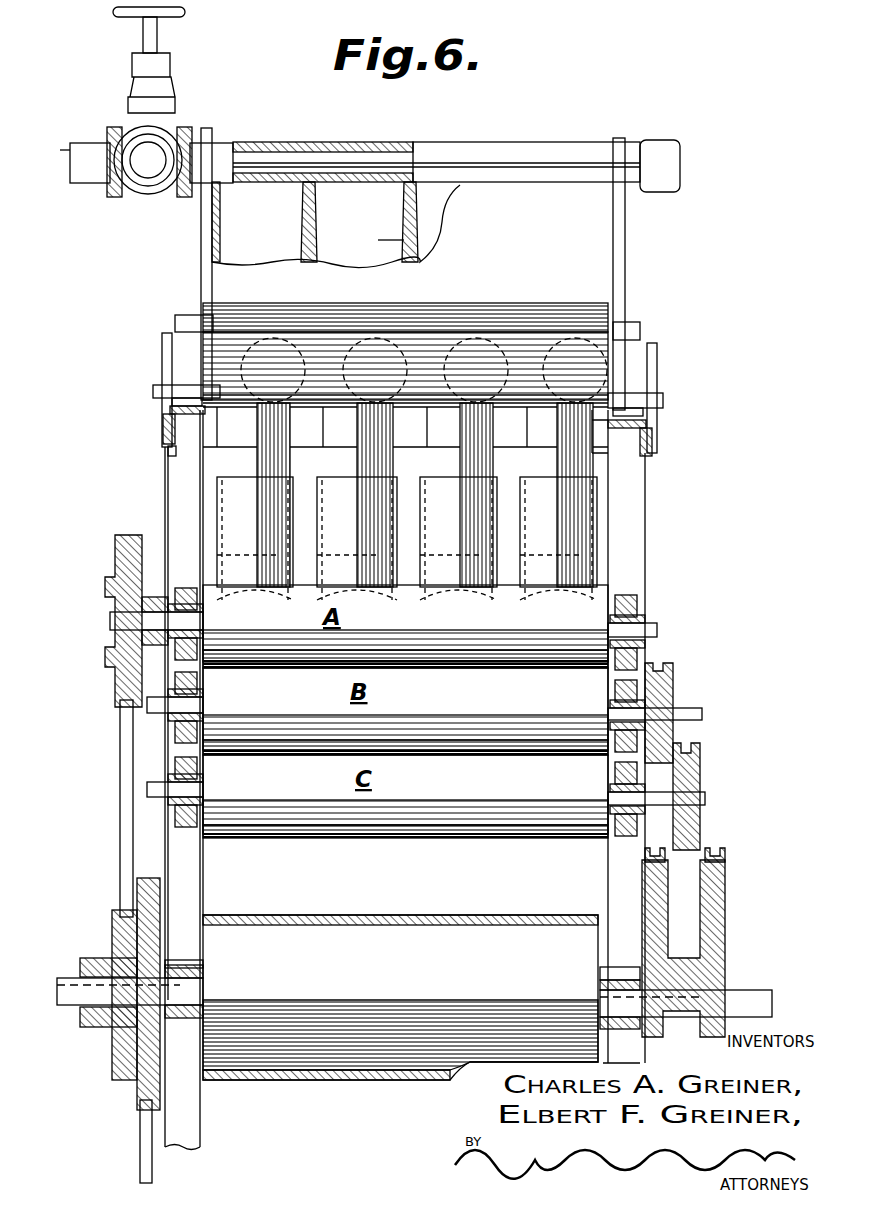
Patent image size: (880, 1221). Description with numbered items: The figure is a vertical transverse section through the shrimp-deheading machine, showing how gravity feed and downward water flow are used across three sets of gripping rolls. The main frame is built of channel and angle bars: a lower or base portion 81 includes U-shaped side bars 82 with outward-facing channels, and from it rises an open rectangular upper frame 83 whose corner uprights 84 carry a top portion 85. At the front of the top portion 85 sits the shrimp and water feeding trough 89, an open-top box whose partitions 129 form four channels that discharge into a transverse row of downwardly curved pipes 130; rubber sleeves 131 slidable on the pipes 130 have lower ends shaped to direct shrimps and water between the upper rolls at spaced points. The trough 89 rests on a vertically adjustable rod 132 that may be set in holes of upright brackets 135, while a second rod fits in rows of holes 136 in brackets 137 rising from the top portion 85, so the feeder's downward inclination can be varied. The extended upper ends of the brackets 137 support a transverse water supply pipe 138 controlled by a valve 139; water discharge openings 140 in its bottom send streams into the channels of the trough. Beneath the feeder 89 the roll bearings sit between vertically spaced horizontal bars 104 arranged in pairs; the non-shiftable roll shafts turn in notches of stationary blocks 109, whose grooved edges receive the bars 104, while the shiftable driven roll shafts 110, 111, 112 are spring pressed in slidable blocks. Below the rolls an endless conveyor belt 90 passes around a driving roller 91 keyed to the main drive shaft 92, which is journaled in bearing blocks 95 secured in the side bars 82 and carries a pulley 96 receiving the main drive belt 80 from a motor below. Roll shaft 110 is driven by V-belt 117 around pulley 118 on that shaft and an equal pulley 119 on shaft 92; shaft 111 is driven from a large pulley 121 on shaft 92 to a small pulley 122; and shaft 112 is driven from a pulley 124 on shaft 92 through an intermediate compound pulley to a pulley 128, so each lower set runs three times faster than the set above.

The main drive belt 80 is at (140, 1158).
The lower or base portion 81 is at (181, 1020).
The U-shaped side bars 82 is at (182, 960).
The open rectangular upper frame 83 is at (168, 452).
The corner uprights 84 is at (178, 510).
The top portion 85 is at (170, 419).
The shrimp and water feeding trough 89 is at (229, 267).
The endless conveyor belt 90 is at (393, 915).
The driving roller 91 is at (400, 997).
The main drive shaft 92 is at (752, 990).
The bearing blocks 95 is at (205, 971).
The pulley 96 is at (145, 1085).
The horizontal bars 104 is at (193, 599).
The stationary blocks 109 is at (200, 650).
The slow speed roll shaft 110 is at (642, 628).
The shiftable roll shaft of the second set 111 is at (703, 712).
The shaft of the shiftable roll of the highest speed set 112 is at (706, 798).
The V-belt 117 is at (120, 812).
The pulley 118 is at (115, 548).
The pulley 119 is at (112, 927).
The large pulley 121 is at (668, 888).
The small pulley 122 is at (674, 683).
The pulley 124 is at (726, 857).
The pulley 128 is at (701, 751).
The partitions 129 is at (372, 237).
The downwardly curved pipes 130 is at (228, 452).
The rubber sleeves 131 is at (335, 498).
The vertically adjustable rod 132 is at (153, 391).
The upright brackets 135 is at (162, 347).
The holes 136 is at (176, 320).
The brackets 137 is at (201, 244).
The water supply pipe 138 is at (255, 142).
The valve 139 is at (150, 178).
The water discharge openings 140 is at (258, 186).